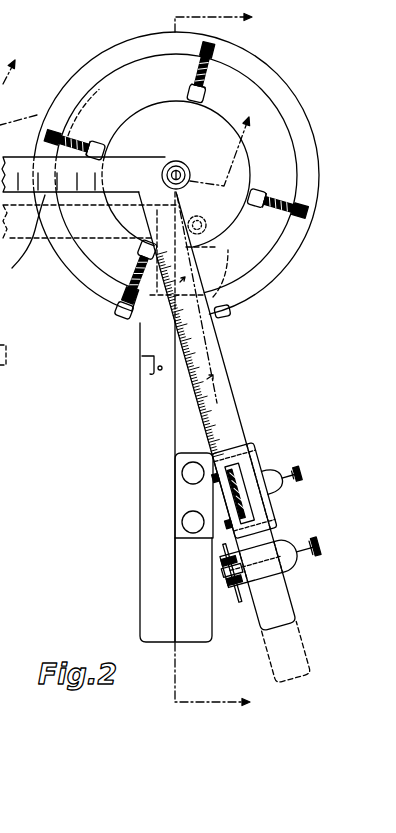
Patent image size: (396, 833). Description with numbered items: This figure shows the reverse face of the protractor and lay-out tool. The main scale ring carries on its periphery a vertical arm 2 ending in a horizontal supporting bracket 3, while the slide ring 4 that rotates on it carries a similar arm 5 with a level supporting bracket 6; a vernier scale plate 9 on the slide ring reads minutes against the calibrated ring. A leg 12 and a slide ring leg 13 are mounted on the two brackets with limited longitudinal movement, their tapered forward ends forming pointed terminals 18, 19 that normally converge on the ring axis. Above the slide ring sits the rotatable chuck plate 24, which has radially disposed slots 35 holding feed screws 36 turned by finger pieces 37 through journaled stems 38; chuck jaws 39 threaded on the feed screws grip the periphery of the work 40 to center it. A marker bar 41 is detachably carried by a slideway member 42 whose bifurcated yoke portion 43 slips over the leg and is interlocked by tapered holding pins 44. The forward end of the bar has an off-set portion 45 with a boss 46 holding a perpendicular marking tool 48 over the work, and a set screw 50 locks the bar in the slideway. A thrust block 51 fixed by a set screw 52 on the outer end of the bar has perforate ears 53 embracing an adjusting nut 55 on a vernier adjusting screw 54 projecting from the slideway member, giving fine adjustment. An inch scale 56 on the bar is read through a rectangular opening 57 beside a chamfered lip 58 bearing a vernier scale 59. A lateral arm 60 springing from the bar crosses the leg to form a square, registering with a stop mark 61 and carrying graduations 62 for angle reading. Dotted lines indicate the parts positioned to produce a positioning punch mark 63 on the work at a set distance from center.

The arm 2 is at (126, 324).
The supporting bracket 3 is at (229, 360).
The slide ring 4 is at (281, 101).
The arm 5 is at (232, 318).
The supporting bracket 6 is at (127, 110).
The vernier scale plate 9 is at (118, 313).
The leg 12 is at (140, 614).
The slide ring leg 13 is at (200, 631).
The pointed terminal 18 is at (130, 236).
The pointed terminal 19 is at (211, 247).
The chuck plate 24 is at (268, 138).
The radially disposed slot 35 is at (94, 142).
The feed screw 36 is at (207, 79).
The finger piece 37 is at (246, 46).
The stem 38 is at (88, 112).
The chuck jaw 39 is at (106, 152).
The work 40 is at (150, 106).
The marker bar 41 is at (232, 390).
The slideway member 42 is at (262, 470).
The yoke portion 43 is at (175, 505).
The tapered holding pin 44 is at (182, 476).
The off-set portion 45 is at (190, 172).
The boss 46 is at (178, 165).
The marking tool 48 is at (170, 168).
The set screw 50 is at (289, 480).
The thrust block 51 is at (285, 582).
The set screw 52 is at (308, 556).
The perforate ear 53 is at (221, 566).
The vernier adjusting screw 54 is at (227, 606).
The adjusting nut 55 is at (222, 582).
The inch scale 56 is at (197, 398).
The rectangular opening 57 is at (245, 508).
The chamfered lip 58 is at (260, 520).
The vernier scale 59 is at (215, 492).
The arm 60 is at (18, 160).
The stop mark 61 is at (142, 357).
The graduations 62 is at (22, 237).
The positioning punch mark 63 is at (206, 222).